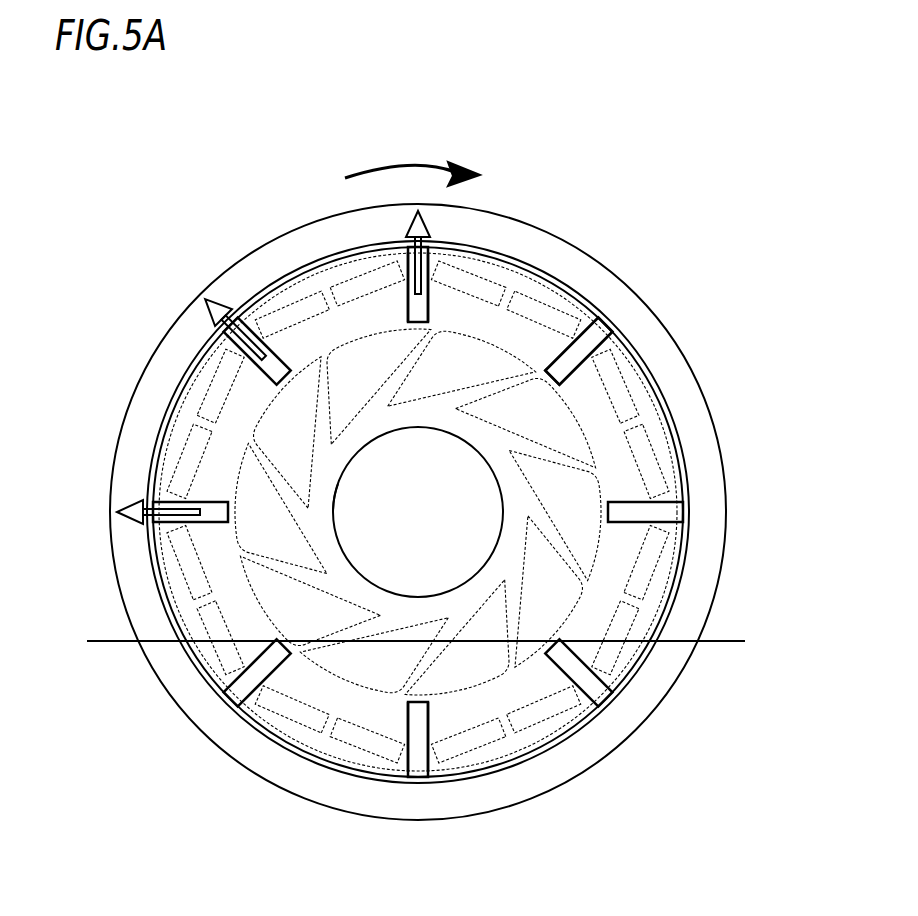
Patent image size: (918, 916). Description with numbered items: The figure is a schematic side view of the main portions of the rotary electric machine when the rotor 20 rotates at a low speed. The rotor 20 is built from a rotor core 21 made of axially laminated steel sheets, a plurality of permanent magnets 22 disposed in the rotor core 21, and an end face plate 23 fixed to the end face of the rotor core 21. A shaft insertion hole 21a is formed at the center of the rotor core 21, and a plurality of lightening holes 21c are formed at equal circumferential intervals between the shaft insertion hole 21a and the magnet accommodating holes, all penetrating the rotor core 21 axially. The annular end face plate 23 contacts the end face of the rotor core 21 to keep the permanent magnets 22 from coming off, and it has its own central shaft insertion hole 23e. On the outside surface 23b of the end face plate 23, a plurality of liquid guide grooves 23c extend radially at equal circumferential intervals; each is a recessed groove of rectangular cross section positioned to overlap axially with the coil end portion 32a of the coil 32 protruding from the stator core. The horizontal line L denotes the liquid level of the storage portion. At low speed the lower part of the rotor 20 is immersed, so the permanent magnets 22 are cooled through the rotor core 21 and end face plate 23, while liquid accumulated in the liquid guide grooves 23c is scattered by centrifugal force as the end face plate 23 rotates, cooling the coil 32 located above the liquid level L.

The rotor 20 is at (516, 136).
The coil 32 is at (418, 512).
The coil end portion 32a is at (537, 242).
The rotor core 21 is at (245, 655).
The shaft insertion hole 21a is at (417, 432).
The lightening hole 21c is at (446, 650).
The permanent magnet 22 is at (203, 625).
The end face plate 23 is at (594, 306).
The outside surface 23b is at (594, 402).
The liquid guide groove 23c is at (400, 283).
The shaft insertion hole 23e is at (336, 502).
The liquid level L is at (707, 645).